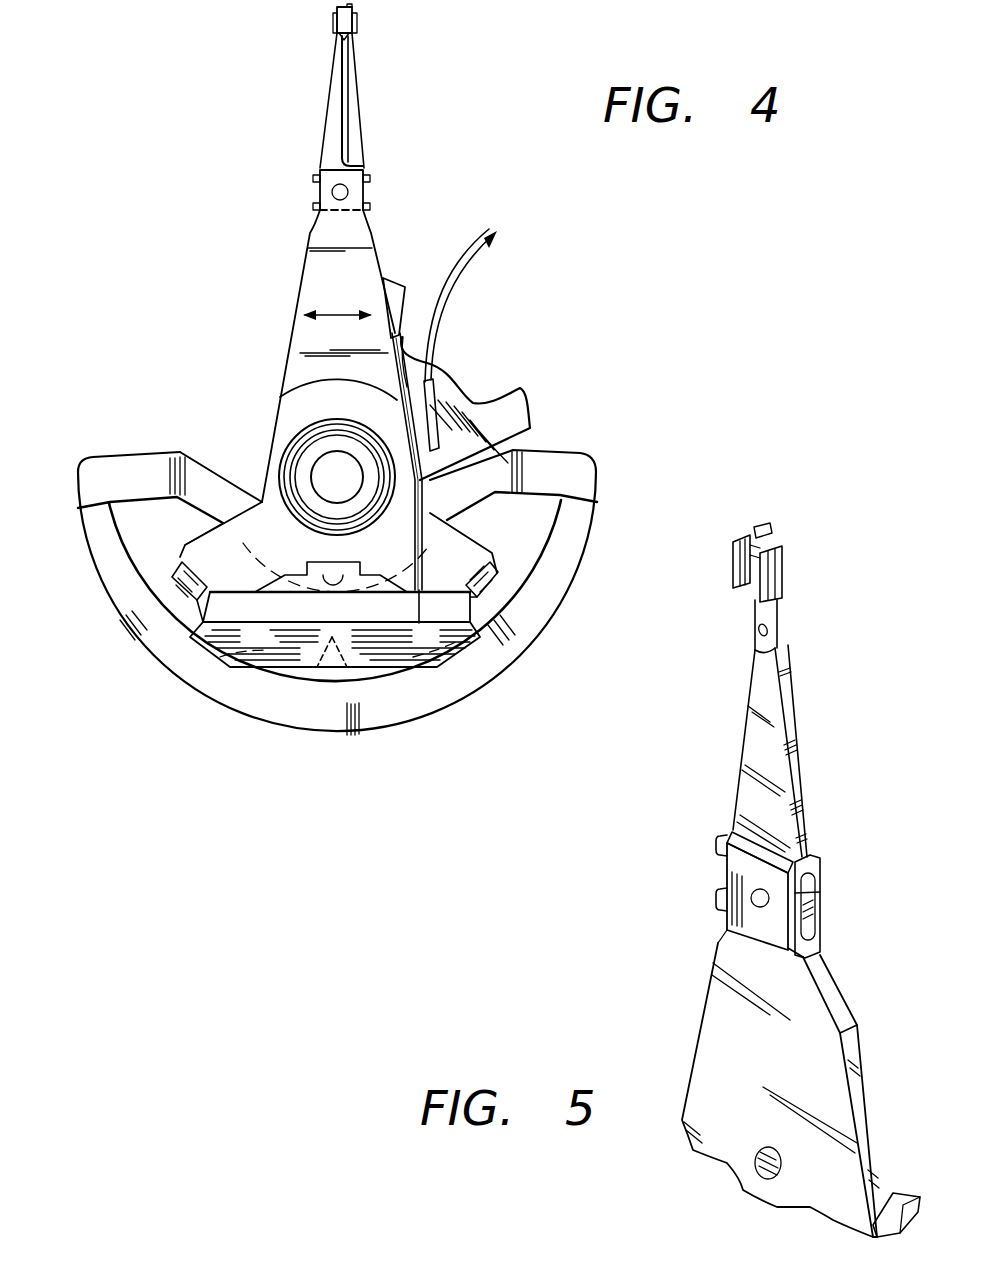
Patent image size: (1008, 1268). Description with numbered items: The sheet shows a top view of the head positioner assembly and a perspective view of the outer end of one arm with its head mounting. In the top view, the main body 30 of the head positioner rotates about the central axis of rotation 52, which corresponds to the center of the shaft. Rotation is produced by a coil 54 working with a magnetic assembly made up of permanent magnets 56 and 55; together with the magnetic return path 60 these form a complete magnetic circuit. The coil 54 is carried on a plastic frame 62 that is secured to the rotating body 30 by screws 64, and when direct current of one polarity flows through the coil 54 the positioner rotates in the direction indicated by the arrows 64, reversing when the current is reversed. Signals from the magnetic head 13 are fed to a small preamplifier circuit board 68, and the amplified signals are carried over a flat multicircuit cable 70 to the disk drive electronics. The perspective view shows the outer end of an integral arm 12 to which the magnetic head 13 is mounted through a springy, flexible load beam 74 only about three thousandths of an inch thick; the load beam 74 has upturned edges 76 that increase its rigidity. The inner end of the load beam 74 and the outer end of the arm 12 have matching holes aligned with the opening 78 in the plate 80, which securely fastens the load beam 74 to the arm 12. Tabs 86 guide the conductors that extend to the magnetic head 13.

In FIG. 4, the integral arm 12 is at (310, 338).
In FIG. 5, the integral arm 12 is at (752, 1050).
In FIG. 4, the magnetic head 13 is at (360, 27).
In FIG. 5, the magnetic head 13 is at (733, 555).
In FIG. 4, the main body 30 is at (272, 518).
In FIG. 4, the central axis of rotation 52 is at (336, 476).
In FIG. 4, the coil 54 is at (331, 652).
In FIG. 4, the permanent magnet 55 is at (362, 670).
In FIG. 4, the permanent magnet 56 is at (320, 667).
In FIG. 4, the magnetic return path 60 is at (166, 659).
In FIG. 4, the plastic frame 62 is at (450, 609).
In FIG. 4, the screws 64 is at (340, 313).
In FIG. 4, the preamplifier circuit board 68 is at (405, 337).
In FIG. 4, the flat multicircuit cable 70 is at (470, 263).
In FIG. 5, the load beam 74 is at (758, 752).
In FIG. 5, the upturned edges 76 is at (797, 803).
In FIG. 5, the opening 78 is at (730, 899).
In FIG. 5, the plate 80 is at (767, 930).
In FIG. 5, the tabs 86 is at (817, 932).